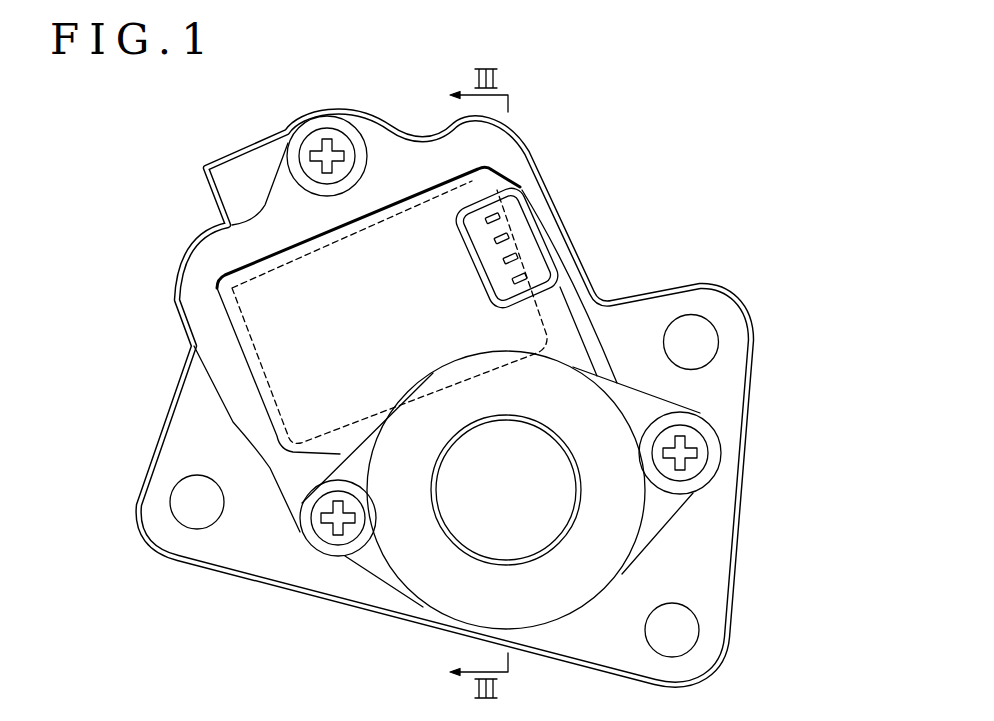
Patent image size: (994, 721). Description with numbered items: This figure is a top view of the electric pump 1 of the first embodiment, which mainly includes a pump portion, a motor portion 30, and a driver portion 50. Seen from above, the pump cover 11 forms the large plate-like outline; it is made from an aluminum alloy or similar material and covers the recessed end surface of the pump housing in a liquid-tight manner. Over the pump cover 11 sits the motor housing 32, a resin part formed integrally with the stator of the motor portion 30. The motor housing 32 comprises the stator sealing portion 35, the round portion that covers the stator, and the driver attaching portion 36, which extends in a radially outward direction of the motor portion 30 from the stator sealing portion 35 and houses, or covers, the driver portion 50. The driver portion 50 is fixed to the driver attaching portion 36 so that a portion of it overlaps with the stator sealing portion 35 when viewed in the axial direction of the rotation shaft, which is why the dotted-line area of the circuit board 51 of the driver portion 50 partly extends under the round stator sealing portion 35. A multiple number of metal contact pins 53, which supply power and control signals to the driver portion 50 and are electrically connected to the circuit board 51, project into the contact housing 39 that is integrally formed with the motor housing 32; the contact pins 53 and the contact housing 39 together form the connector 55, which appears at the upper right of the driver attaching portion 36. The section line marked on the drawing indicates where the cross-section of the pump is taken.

The electric pump 1 is at (108, 195).
The pump cover 11 is at (753, 380).
The motor portion 30 is at (628, 578).
The motor housing 32 is at (420, 391).
The stator sealing portion 35 is at (415, 575).
The driver attaching portion 36 is at (273, 220).
The contact housing 39 is at (537, 223).
The driver portion 50 is at (213, 280).
The circuit board 51 is at (227, 327).
The contact pins 53 is at (524, 279).
The connector 55 is at (532, 195).